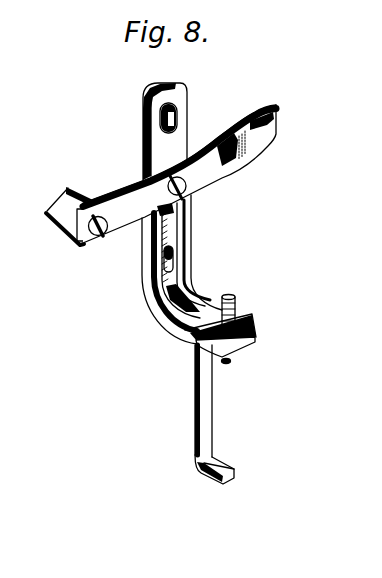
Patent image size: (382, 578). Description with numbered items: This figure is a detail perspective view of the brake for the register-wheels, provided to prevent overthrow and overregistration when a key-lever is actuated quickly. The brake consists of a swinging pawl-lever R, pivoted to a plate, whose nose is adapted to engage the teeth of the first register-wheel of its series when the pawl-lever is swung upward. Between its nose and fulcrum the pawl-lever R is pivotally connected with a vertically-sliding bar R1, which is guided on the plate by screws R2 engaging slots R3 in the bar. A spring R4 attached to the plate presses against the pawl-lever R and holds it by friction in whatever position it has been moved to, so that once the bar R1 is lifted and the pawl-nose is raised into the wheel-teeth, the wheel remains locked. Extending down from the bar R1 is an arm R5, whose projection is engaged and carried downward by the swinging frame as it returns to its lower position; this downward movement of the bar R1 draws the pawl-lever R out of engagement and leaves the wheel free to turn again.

The pawl-lever R is at (203, 175).
The vertically-sliding bar R1 is at (147, 156).
The screw R2 is at (234, 299).
The slot R3 is at (178, 118).
The spring R4 is at (227, 466).
The arm R5 is at (207, 417).